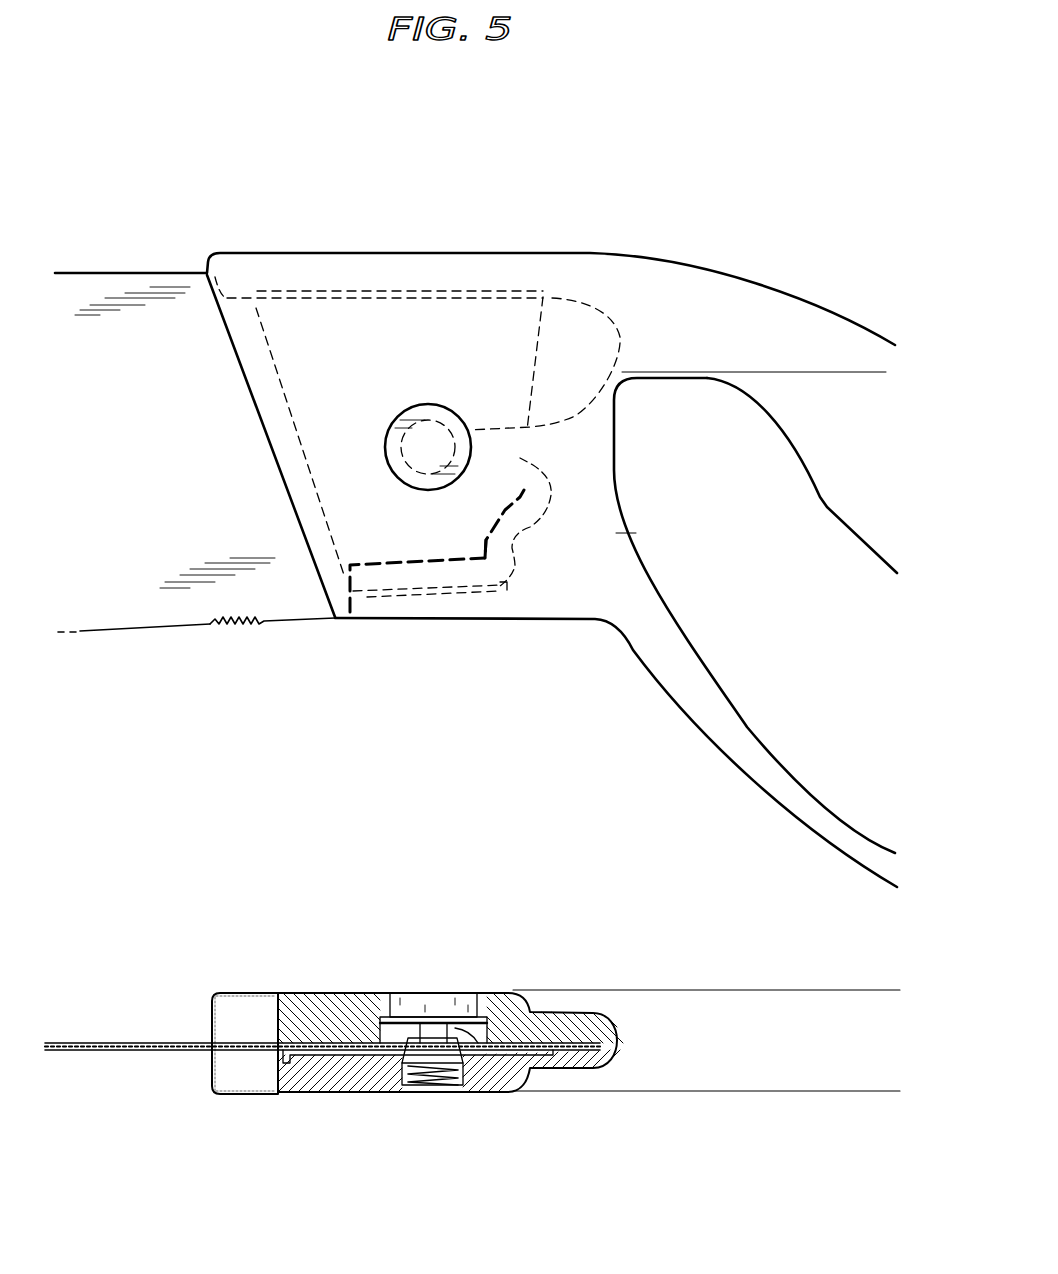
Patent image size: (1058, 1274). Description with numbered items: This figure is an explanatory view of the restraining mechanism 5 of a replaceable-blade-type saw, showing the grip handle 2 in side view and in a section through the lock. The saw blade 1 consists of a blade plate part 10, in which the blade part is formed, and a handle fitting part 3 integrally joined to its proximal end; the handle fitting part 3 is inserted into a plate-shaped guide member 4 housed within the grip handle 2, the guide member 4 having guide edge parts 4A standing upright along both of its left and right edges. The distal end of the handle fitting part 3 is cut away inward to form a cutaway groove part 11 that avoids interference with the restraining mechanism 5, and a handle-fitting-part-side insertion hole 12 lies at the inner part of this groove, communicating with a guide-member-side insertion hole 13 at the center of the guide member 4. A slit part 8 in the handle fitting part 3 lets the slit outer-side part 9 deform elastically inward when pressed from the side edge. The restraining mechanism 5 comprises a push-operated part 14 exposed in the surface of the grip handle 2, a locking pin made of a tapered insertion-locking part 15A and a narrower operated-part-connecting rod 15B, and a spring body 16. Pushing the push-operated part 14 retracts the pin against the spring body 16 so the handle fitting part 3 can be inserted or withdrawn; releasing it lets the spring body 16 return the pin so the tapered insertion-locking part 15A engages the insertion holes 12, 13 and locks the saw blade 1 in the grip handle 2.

The saw blade 1 is at (92, 647).
The grip handle 2 is at (677, 970).
The handle fitting part 3 is at (596, 320).
The guide member 4 is at (268, 370).
The guide edge parts 4A is at (384, 290).
The restraining mechanism 5 is at (430, 378).
The slit part 8 is at (427, 538).
The slit outer-side part 9 is at (402, 577).
The blade plate part 10 is at (160, 597).
The cutaway groove part 11 is at (507, 462).
The handle-fitting-part-side insertion hole 12 is at (415, 467).
The guide-member-side insertion hole 13 is at (436, 424).
The push-operated part 14 is at (425, 995).
The tapered insertion-locking part 15A is at (417, 1052).
The operated-part-connecting rod 15B is at (470, 1035).
The spring body 16 is at (453, 1087).